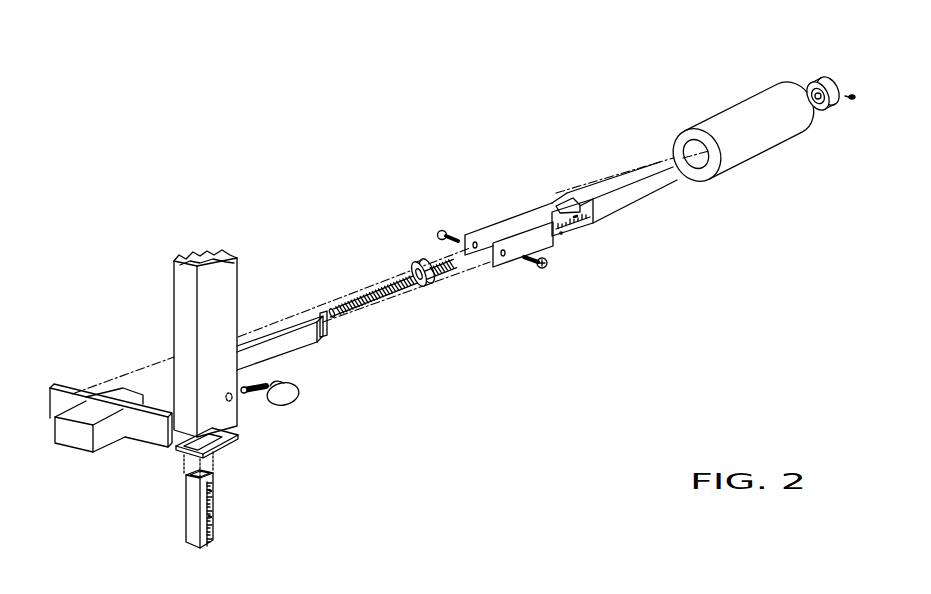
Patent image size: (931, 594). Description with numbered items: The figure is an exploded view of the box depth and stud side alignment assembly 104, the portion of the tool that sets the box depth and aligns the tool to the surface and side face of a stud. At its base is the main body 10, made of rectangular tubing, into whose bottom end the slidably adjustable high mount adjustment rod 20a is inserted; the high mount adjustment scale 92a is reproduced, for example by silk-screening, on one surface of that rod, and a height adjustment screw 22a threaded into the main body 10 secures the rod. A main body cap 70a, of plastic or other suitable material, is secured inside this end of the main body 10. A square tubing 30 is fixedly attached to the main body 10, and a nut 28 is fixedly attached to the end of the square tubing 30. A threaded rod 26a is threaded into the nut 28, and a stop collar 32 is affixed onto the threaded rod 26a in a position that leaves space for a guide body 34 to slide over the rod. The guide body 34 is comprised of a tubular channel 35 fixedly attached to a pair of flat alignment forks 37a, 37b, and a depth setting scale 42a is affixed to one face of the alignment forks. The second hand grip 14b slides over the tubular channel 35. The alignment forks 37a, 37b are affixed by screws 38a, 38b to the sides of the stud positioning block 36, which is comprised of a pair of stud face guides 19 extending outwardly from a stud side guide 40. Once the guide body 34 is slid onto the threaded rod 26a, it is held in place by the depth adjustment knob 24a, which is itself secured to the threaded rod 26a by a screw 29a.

The main body 10 is at (233, 268).
The second hand grip 14b is at (742, 112).
The stud face guides 19 is at (56, 393).
The high mount adjustment rod 20a is at (193, 517).
The height adjustment screw 22a is at (291, 393).
The depth adjustment knob 24a is at (838, 78).
The threaded rod 26a is at (398, 287).
The nut 28 is at (314, 312).
The screw 29a is at (853, 100).
The square tubing 30 is at (278, 327).
The stop collar 32 is at (416, 266).
The guide body 34 is at (578, 155).
The tubular channel 35 is at (621, 178).
The stud positioning block 36 is at (100, 365).
The alignment fork 37a is at (543, 240).
The alignment fork 37b is at (518, 222).
The screw 38a is at (538, 270).
The screw 38b is at (441, 230).
The stud side guide 40 is at (108, 438).
The depth setting scale 42a is at (587, 225).
The main body cap 70a is at (228, 441).
The high mount adjustment scale 92a is at (207, 505).
The box depth and stud side alignment assembly 104 is at (507, 400).